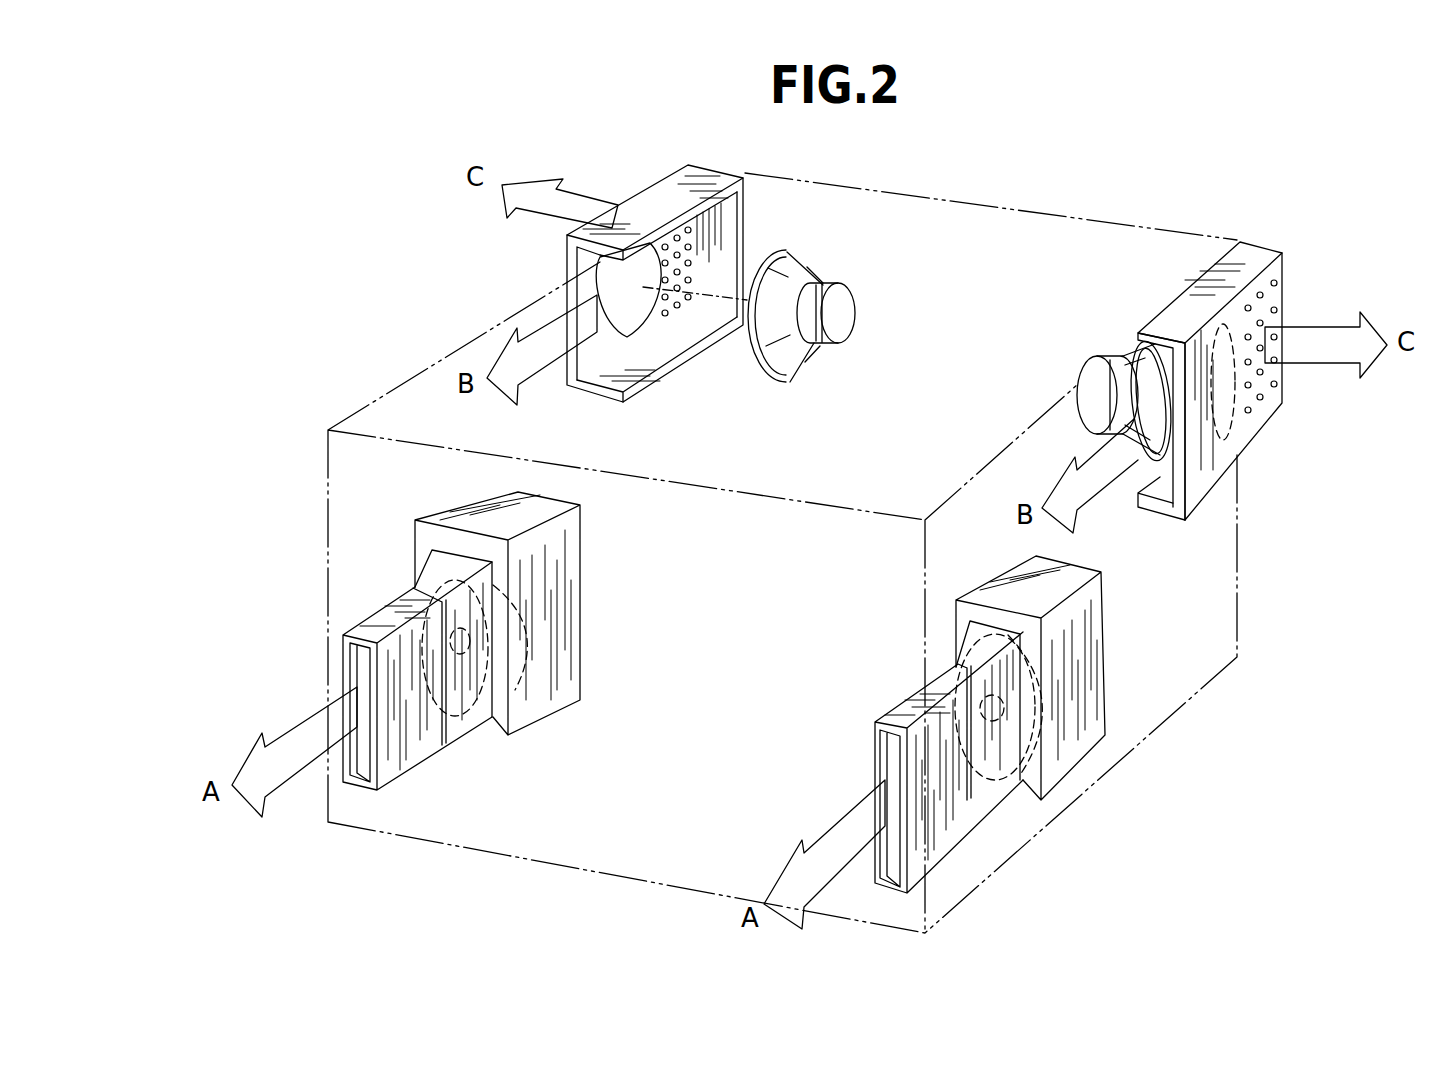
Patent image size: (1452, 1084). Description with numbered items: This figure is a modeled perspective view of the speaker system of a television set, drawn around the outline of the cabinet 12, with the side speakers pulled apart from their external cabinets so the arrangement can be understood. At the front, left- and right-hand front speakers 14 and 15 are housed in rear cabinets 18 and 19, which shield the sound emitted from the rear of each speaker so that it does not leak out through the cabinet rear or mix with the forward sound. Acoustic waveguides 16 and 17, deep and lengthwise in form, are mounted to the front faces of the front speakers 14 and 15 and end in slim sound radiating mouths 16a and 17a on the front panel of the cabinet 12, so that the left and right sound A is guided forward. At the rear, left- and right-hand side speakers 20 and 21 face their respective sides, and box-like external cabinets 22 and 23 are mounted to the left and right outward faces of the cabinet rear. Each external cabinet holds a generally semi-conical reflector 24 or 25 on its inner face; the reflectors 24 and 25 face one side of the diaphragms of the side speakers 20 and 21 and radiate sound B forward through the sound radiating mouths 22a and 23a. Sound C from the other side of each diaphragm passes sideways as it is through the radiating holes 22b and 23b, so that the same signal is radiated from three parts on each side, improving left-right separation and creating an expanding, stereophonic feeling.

The cabinet 12 is at (367, 407).
The left-hand front speaker 14 is at (455, 712).
The right-hand front speaker 15 is at (988, 775).
The acoustic waveguide 16 is at (398, 753).
The sound radiating mouth 16a is at (360, 773).
The acoustic waveguide 17 is at (940, 843).
The sound radiating mouth 17a is at (887, 885).
The rear cabinet 18 is at (552, 683).
The rear cabinet 19 is at (1087, 740).
The left-hand side speaker 20 is at (812, 268).
The right-hand side speaker 21 is at (1127, 358).
The external cabinet 22 is at (655, 193).
The sound radiating mouth 22a is at (585, 260).
The radiating holes 22b is at (693, 237).
The external cabinet 23 is at (1253, 253).
The sound radiating mouth 23a is at (1157, 497).
The radiating holes 23b is at (1277, 307).
The reflector 24 is at (643, 315).
The reflector 25 is at (1233, 450).